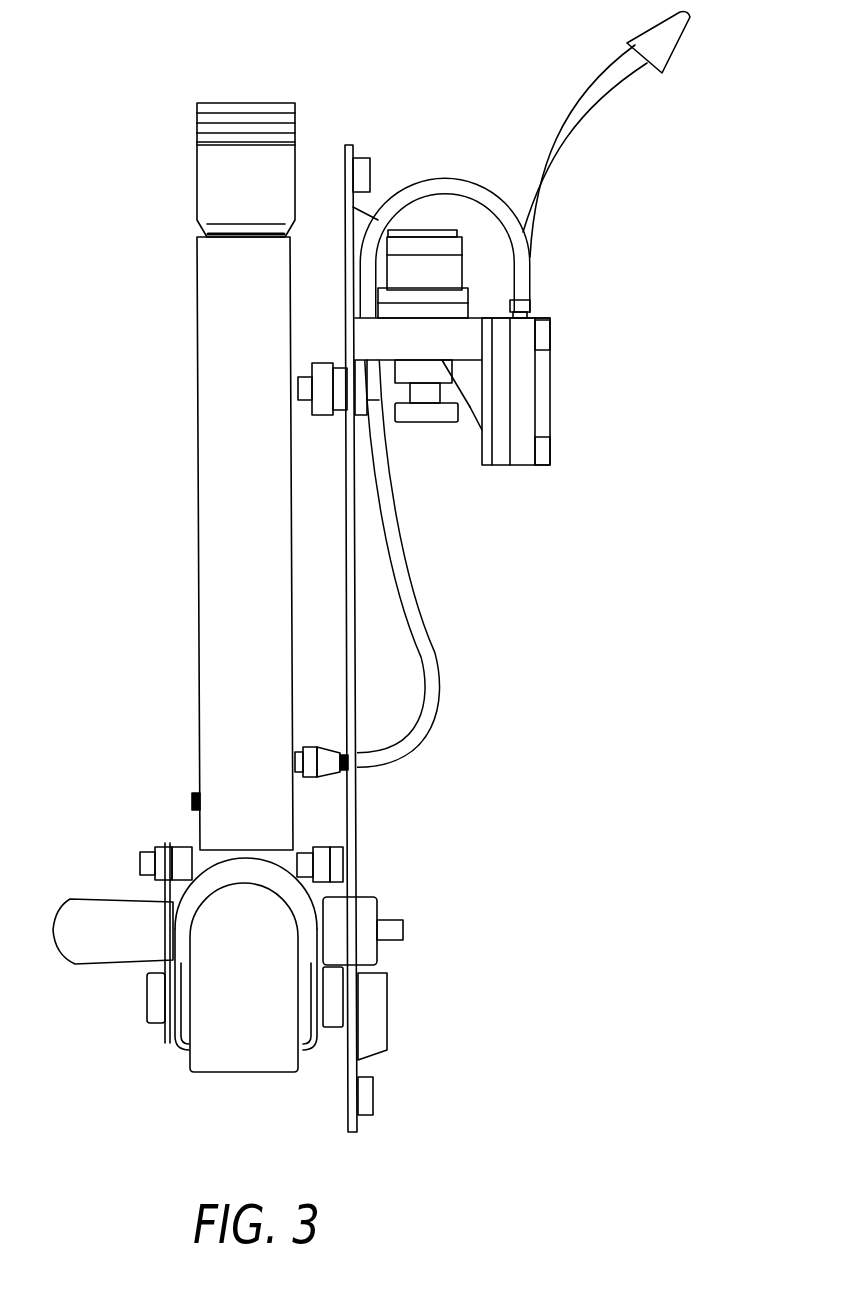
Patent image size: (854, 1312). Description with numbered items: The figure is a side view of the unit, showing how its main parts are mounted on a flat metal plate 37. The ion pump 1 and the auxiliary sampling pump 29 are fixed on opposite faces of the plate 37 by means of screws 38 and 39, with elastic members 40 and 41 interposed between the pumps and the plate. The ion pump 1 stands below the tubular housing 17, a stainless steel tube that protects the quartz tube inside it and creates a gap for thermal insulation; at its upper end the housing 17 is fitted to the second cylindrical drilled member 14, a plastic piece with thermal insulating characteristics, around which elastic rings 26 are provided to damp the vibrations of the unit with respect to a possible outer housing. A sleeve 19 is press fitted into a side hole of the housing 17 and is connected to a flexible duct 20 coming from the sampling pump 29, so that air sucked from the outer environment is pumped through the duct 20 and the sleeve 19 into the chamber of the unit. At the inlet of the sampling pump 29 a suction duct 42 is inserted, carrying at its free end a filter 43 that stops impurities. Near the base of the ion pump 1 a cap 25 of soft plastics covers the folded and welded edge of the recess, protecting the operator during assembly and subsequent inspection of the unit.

The ion pump 1 is at (242, 1077).
The second cylindrical drilled member 14 is at (197, 188).
The tubular housing 17 is at (197, 478).
The sleeve 19 is at (312, 750).
The flexible duct 20 is at (428, 657).
The cap 25 is at (100, 918).
The elastic rings 26 is at (197, 108).
The auxiliary sampling pump 29 is at (472, 258).
The plate 37 is at (360, 585).
The screw 38 is at (190, 850).
The screw 39 is at (304, 376).
The elastic member 40 is at (344, 866).
The elastic member 41 is at (340, 410).
The suction duct 42 is at (573, 143).
The filter 43 is at (667, 42).